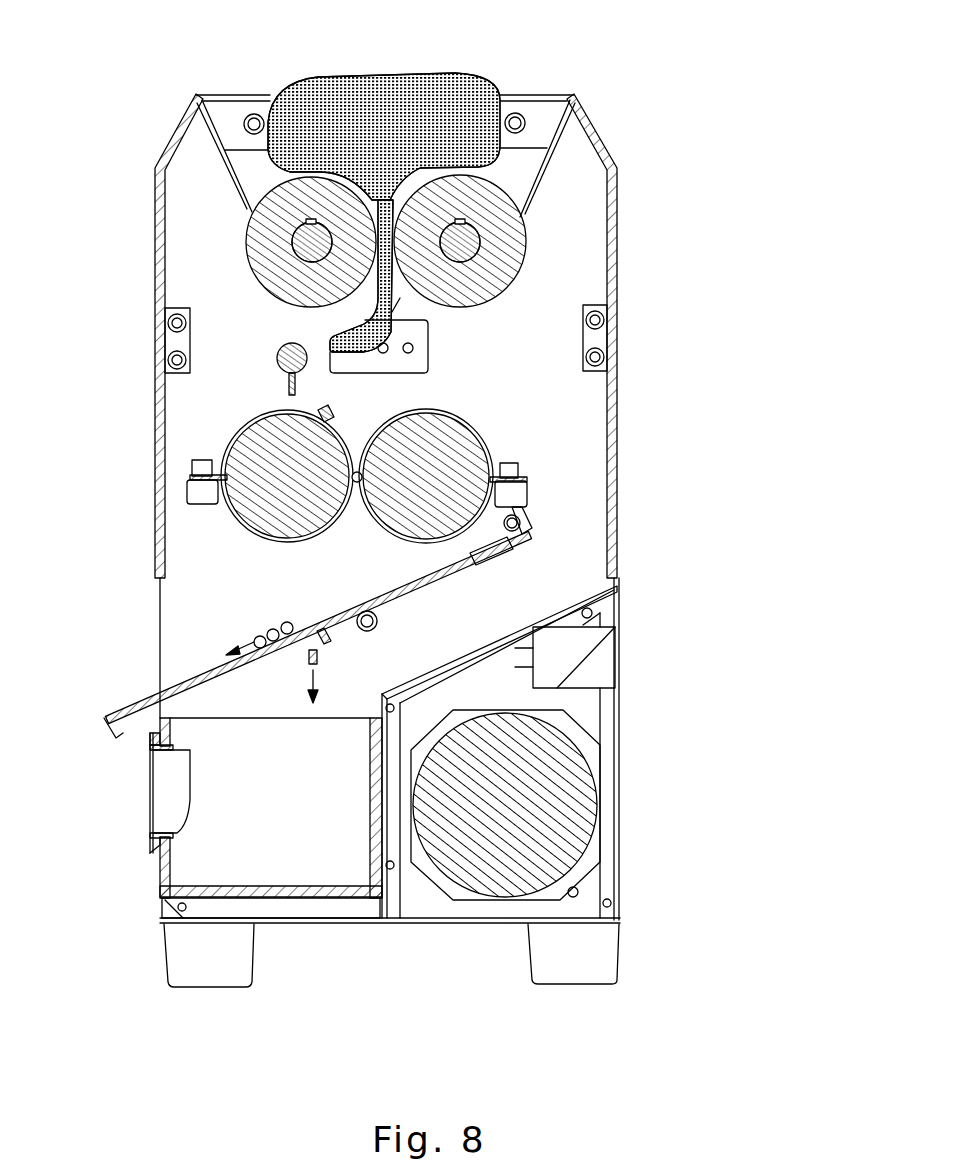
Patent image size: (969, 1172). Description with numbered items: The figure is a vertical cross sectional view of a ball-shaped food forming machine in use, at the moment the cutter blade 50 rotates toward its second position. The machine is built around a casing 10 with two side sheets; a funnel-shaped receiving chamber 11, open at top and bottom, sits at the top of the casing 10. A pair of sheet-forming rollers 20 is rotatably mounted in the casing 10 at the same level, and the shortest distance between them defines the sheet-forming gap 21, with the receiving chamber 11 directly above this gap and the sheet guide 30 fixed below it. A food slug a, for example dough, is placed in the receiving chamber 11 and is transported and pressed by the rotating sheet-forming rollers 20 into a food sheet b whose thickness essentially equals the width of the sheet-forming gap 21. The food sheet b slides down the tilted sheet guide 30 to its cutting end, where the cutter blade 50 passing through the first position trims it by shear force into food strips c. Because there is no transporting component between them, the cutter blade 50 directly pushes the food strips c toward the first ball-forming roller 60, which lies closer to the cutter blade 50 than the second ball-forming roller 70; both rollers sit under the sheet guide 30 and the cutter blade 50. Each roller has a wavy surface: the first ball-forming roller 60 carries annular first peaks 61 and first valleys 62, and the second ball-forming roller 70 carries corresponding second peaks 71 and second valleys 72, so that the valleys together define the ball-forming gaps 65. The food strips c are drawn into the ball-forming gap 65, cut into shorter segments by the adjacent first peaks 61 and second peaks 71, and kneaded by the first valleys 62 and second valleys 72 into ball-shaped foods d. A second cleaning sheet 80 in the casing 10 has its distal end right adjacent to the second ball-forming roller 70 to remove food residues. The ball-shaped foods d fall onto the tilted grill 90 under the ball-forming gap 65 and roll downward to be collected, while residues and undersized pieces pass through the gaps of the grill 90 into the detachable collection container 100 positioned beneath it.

The casing 10 is at (163, 263).
The receiving chamber 11 is at (518, 157).
The sheet-forming rollers 20 is at (273, 213).
The sheet-forming gap 21 is at (388, 203).
The sheet guide 30 is at (395, 305).
The cutter blade 50 is at (288, 386).
The first ball-forming roller 60 is at (262, 447).
The first peaks 61 is at (255, 538).
The first valleys 62 is at (355, 512).
The ball-forming gaps 65 is at (354, 532).
The second ball-forming roller 70 is at (467, 453).
The second peaks 71 is at (420, 543).
The second valleys 72 is at (363, 435).
The second cleaning sheet 80 is at (520, 520).
The grill 90 is at (180, 685).
The collection container 100 is at (207, 853).
The food slug a is at (315, 105).
The food sheet b is at (390, 288).
The food strips c is at (335, 410).
The ball-shaped foods d is at (256, 634).
The fine particles e is at (310, 658).